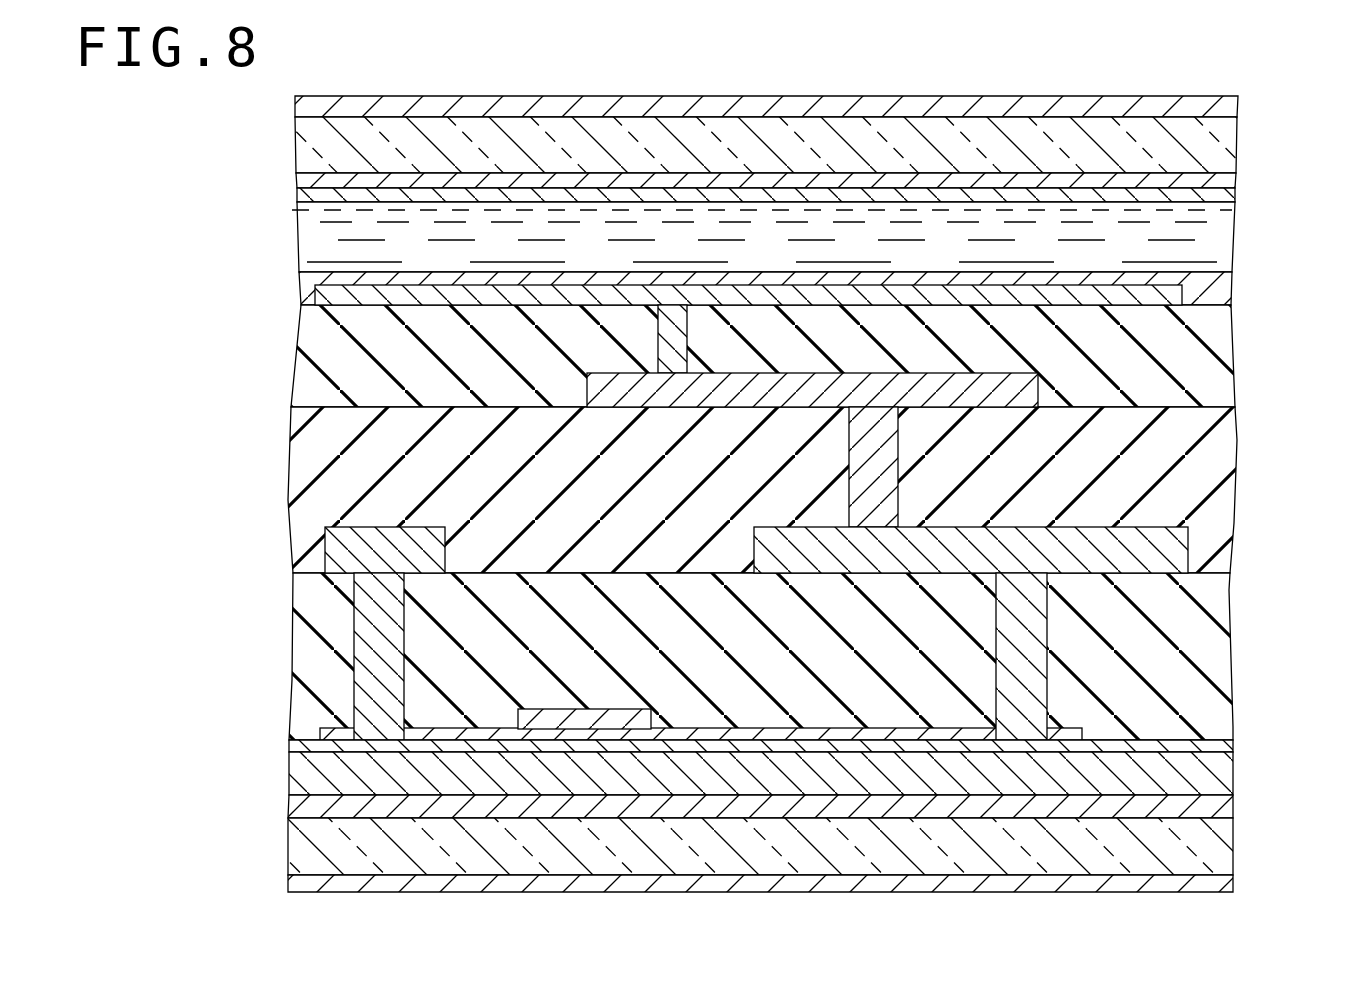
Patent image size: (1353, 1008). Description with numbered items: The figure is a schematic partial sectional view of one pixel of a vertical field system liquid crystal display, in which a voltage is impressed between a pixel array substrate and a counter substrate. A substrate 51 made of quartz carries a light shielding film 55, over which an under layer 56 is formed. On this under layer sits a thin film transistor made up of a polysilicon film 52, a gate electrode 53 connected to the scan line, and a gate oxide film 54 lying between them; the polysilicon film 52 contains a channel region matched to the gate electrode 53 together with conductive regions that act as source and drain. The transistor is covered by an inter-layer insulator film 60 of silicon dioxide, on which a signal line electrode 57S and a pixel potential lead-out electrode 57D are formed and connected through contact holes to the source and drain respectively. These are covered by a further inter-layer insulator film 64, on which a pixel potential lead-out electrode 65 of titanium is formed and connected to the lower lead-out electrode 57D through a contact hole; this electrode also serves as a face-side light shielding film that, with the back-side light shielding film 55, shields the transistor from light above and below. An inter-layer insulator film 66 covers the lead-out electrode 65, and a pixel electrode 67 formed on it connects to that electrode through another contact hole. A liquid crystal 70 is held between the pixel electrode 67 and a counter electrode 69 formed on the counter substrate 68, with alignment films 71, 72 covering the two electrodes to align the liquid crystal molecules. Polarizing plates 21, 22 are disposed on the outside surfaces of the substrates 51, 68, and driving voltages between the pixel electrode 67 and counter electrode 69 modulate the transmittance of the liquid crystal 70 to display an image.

The polarizing plate 21 is at (1223, 882).
The polarizing plate 22 is at (1240, 105).
The substrate 51 is at (1218, 842).
The polysilicon film 52 is at (1057, 743).
The gate electrode 53 is at (518, 718).
The gate oxide film 54 is at (968, 733).
The light shielding film 55 is at (1218, 807).
The under layer 56 is at (1215, 765).
The signal line electrode 57S is at (340, 551).
The pixel potential lead-out electrode 57D is at (1167, 547).
The inter-layer insulator film 60 is at (1207, 632).
The inter-layer insulator film 64 is at (1215, 445).
The pixel potential lead-out electrode 65 is at (1015, 390).
The inter-layer insulator film 66 is at (1210, 338).
The pixel electrode 67 is at (1170, 298).
The counter substrate 68 is at (1227, 150).
The counter electrode 69 is at (1227, 180).
The liquid crystal 70 is at (1222, 242).
The alignment film 71 is at (1217, 280).
The alignment film 72 is at (1227, 195).